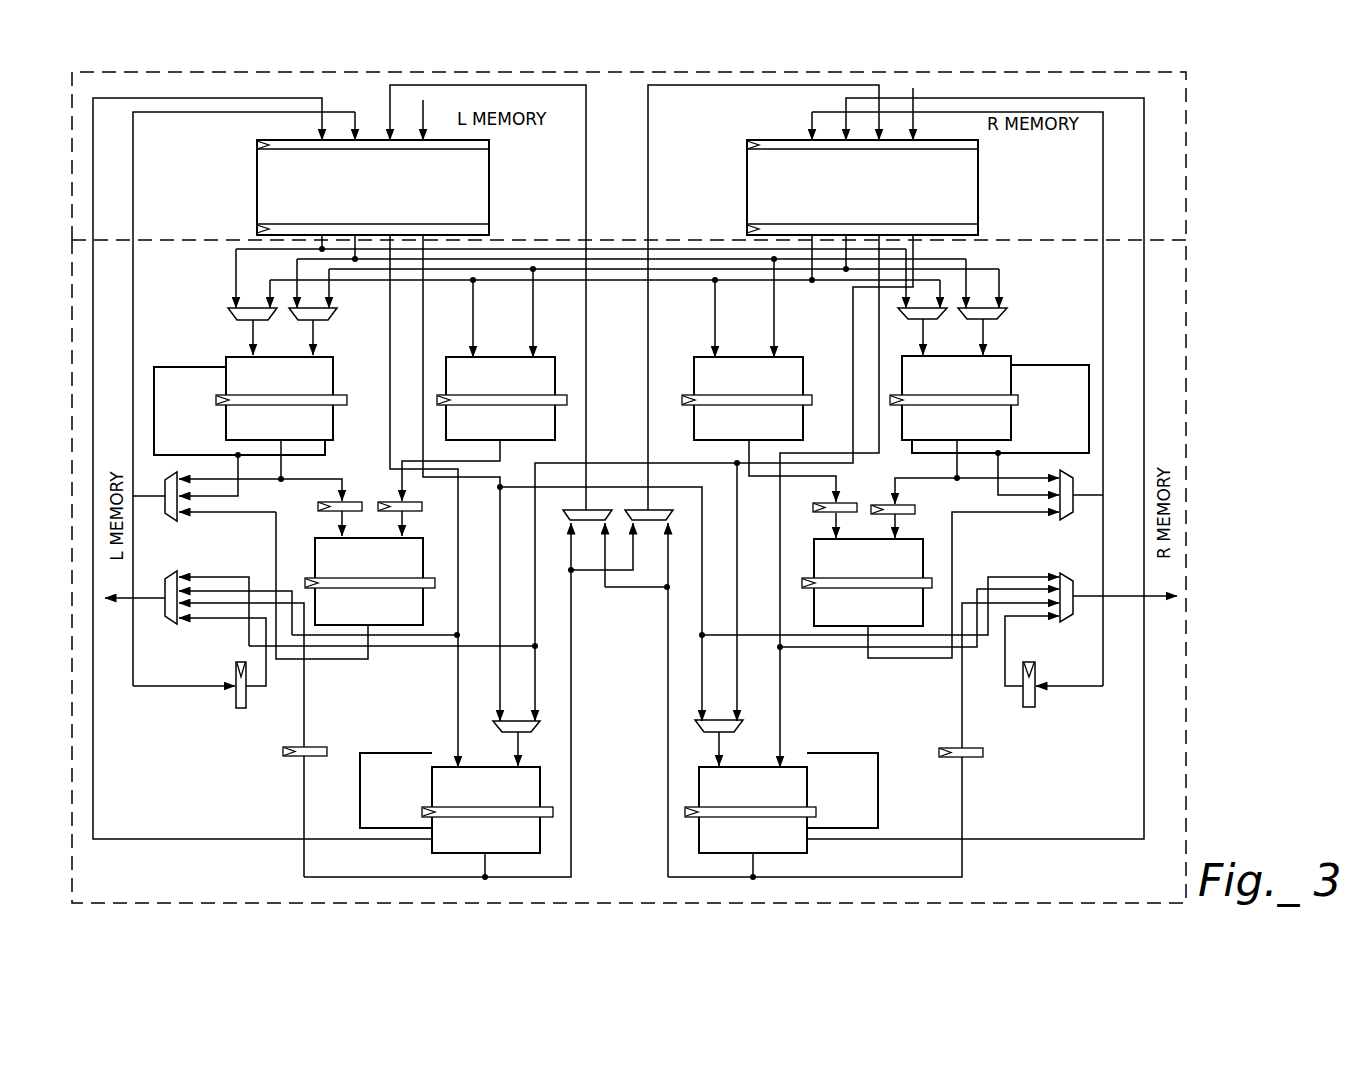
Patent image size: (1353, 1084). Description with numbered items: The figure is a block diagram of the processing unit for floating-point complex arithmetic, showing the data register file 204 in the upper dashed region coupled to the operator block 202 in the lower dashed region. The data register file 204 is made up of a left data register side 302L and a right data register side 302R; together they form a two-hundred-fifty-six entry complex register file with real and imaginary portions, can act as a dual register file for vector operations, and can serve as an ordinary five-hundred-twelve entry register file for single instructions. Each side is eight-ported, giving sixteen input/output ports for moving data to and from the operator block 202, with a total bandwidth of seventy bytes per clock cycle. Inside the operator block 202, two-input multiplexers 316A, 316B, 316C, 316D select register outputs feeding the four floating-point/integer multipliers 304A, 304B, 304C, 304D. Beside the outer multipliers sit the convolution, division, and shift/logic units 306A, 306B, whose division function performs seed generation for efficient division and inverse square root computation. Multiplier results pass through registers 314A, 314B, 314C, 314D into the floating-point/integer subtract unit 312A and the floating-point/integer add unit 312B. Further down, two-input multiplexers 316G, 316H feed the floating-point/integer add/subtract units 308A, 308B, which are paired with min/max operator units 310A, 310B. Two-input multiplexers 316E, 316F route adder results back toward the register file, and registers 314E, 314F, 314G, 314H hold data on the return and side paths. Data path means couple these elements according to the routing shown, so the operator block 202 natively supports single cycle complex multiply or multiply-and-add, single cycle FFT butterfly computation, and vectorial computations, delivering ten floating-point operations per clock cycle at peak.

The operator block 202 is at (1186, 378).
The data register file 204 is at (1186, 162).
The left data register side 302L is at (257, 178).
The right data register side 302R is at (978, 175).
The floating-point/integer multiplier 304A is at (240, 357).
The floating-point/integer multiplier 304B is at (464, 357).
The floating-point/integer multiplier 304C is at (786, 357).
The floating-point/integer multiplier 304D is at (1000, 356).
The convolution, division, and shift/logic unit 306A is at (192, 367).
The convolution, division, and shift/logic unit 306B is at (1046, 365).
The floating-point/integer add/subtract unit 308A is at (456, 853).
The floating-point/integer add/subtract unit 308B is at (780, 853).
The min/max operator unit 310A is at (395, 752).
The min/max operator unit 310B is at (845, 753).
The floating-point/integer subtract unit 312A is at (385, 626).
The floating-point/integer add unit 312B is at (852, 627).
The register 314A is at (319, 506).
The register 314B is at (422, 506).
The register 314C is at (813, 508).
The register 314D is at (915, 509).
The register 314E is at (240, 708).
The register 314F is at (1028, 707).
The register 314G is at (283, 752).
The register 314H is at (983, 752).
The two-input multiplexer 316A is at (230, 310).
The two-input multiplexer 316B is at (331, 310).
The two-input multiplexer 316C is at (900, 314).
The two-input multiplexer 316D is at (1002, 308).
The two-input multiplexer 316E is at (564, 515).
The two-input multiplexer 316F is at (690, 507).
The two-input multiplexer 316G is at (541, 725).
The two-input multiplexer 316H is at (694, 725).